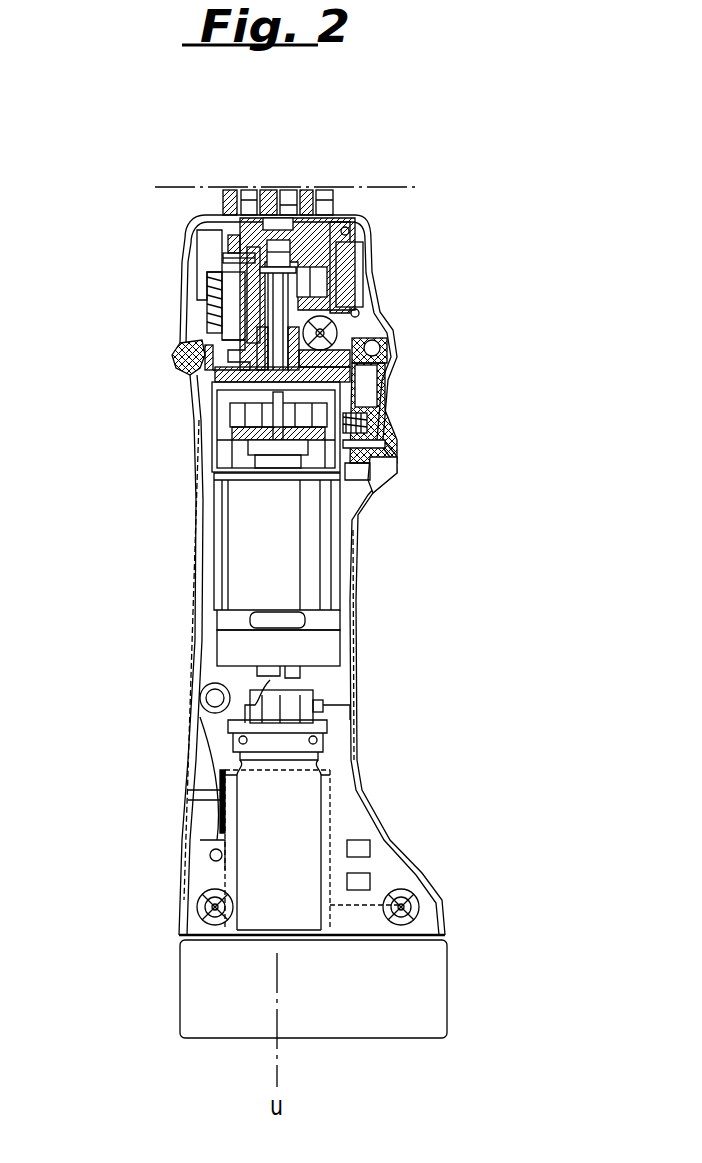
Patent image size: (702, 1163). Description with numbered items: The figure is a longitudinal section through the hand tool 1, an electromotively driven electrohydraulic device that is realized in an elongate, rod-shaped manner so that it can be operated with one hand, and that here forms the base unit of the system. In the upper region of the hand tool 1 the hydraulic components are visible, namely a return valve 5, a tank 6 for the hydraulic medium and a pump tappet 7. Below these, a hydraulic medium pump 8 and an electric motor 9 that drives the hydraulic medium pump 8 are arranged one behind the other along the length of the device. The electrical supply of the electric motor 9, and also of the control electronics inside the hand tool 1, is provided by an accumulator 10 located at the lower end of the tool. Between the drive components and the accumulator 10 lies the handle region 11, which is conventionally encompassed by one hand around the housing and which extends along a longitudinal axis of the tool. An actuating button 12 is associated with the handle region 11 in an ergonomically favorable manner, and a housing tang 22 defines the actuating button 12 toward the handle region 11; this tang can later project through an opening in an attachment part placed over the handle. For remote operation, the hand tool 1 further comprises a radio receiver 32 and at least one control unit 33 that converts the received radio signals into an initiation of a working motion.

The hand tool 1 is at (478, 320).
The return valve 5 is at (220, 258).
The tank 6 is at (205, 280).
The pump tappet 7 is at (275, 322).
The hydraulic medium pump 8 is at (245, 437).
The electric motor 9 is at (270, 650).
The accumulator 10 is at (372, 1000).
The handle region 11 is at (363, 555).
The actuating button 12 is at (378, 420).
The housing tang 22 is at (388, 468).
The radio receiver 32 is at (358, 850).
The control unit 33 is at (358, 882).